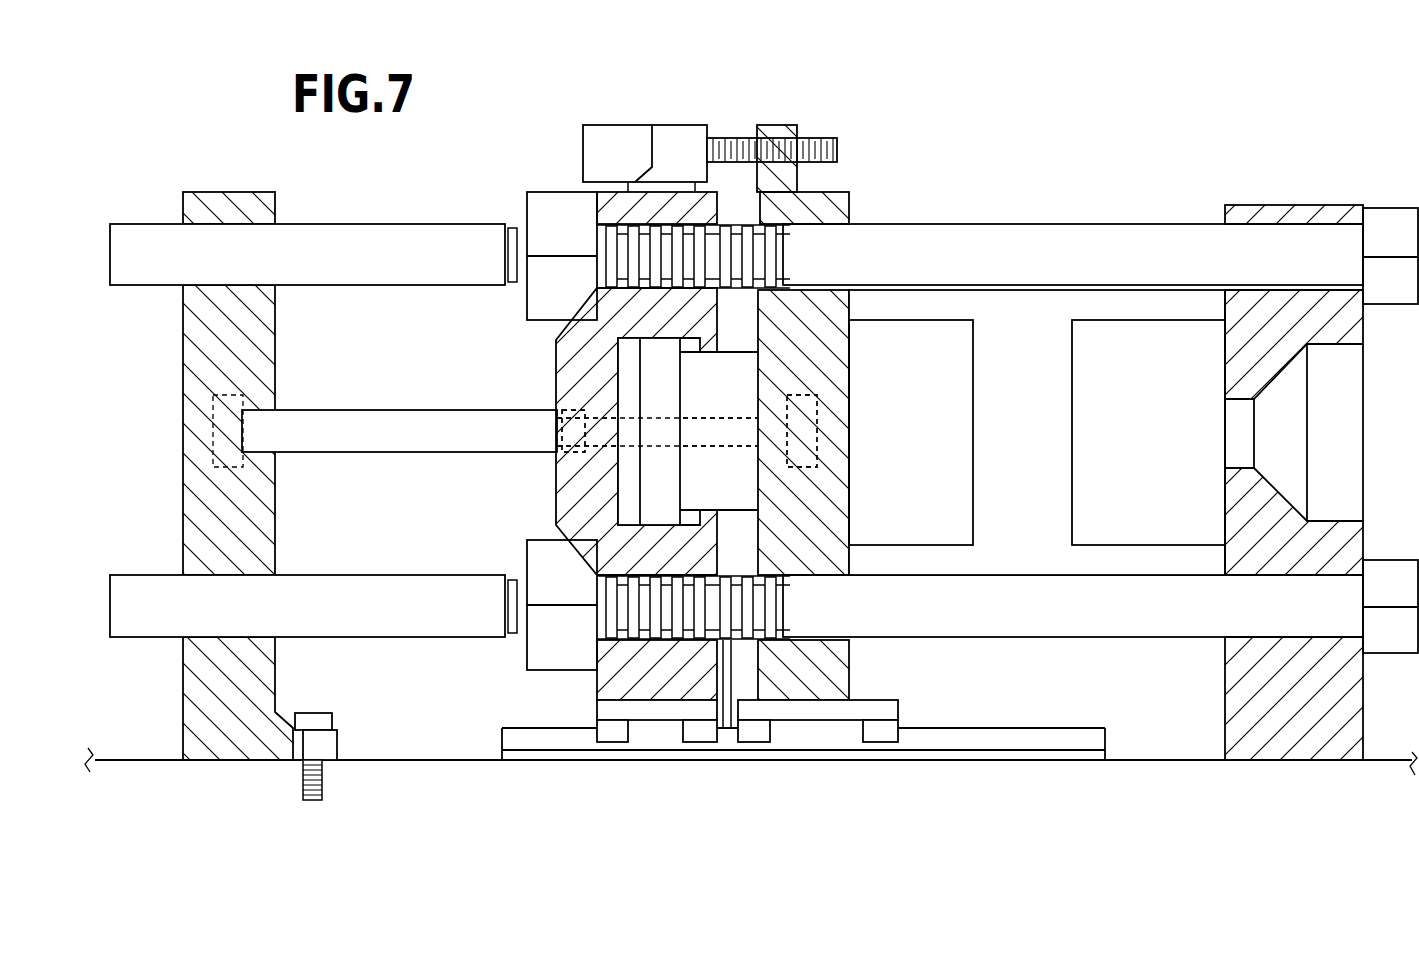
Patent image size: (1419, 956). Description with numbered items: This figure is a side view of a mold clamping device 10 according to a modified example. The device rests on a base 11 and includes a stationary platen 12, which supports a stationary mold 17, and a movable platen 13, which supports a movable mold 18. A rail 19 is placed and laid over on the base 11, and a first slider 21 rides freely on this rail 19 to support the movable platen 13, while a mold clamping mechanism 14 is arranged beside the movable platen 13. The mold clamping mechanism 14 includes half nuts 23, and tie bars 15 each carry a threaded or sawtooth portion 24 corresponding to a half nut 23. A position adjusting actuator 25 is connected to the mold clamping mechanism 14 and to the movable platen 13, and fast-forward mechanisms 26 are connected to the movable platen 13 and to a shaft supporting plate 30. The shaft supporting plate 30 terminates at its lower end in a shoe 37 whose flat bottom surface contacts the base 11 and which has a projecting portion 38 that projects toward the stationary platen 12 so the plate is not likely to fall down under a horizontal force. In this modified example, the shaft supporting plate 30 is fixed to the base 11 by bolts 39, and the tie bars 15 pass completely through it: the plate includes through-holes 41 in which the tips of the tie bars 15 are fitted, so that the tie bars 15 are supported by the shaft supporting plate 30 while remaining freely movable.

The mold clamping device 10 is at (1187, 103).
The base 11 is at (1180, 758).
The stationary platen 12 is at (1290, 205).
The movable platen 13 is at (848, 195).
The mold clamping mechanism 14 is at (598, 210).
The tie bars 15 is at (1038, 248).
The stationary mold 17 is at (1105, 357).
The movable mold 18 is at (940, 503).
The rail 19 is at (975, 740).
The first slider 21 is at (652, 712).
The half nuts 23 is at (543, 210).
The threaded or sawtooth portion 24 is at (728, 200).
The position adjusting actuator 25 is at (672, 148).
The fast-forward mechanisms 26 is at (395, 432).
The shaft supporting plate 30 is at (232, 200).
The shoe 37 is at (215, 762).
The projecting portion 38 is at (345, 745).
The bolts 39 is at (312, 712).
The through-holes 41 is at (222, 283).